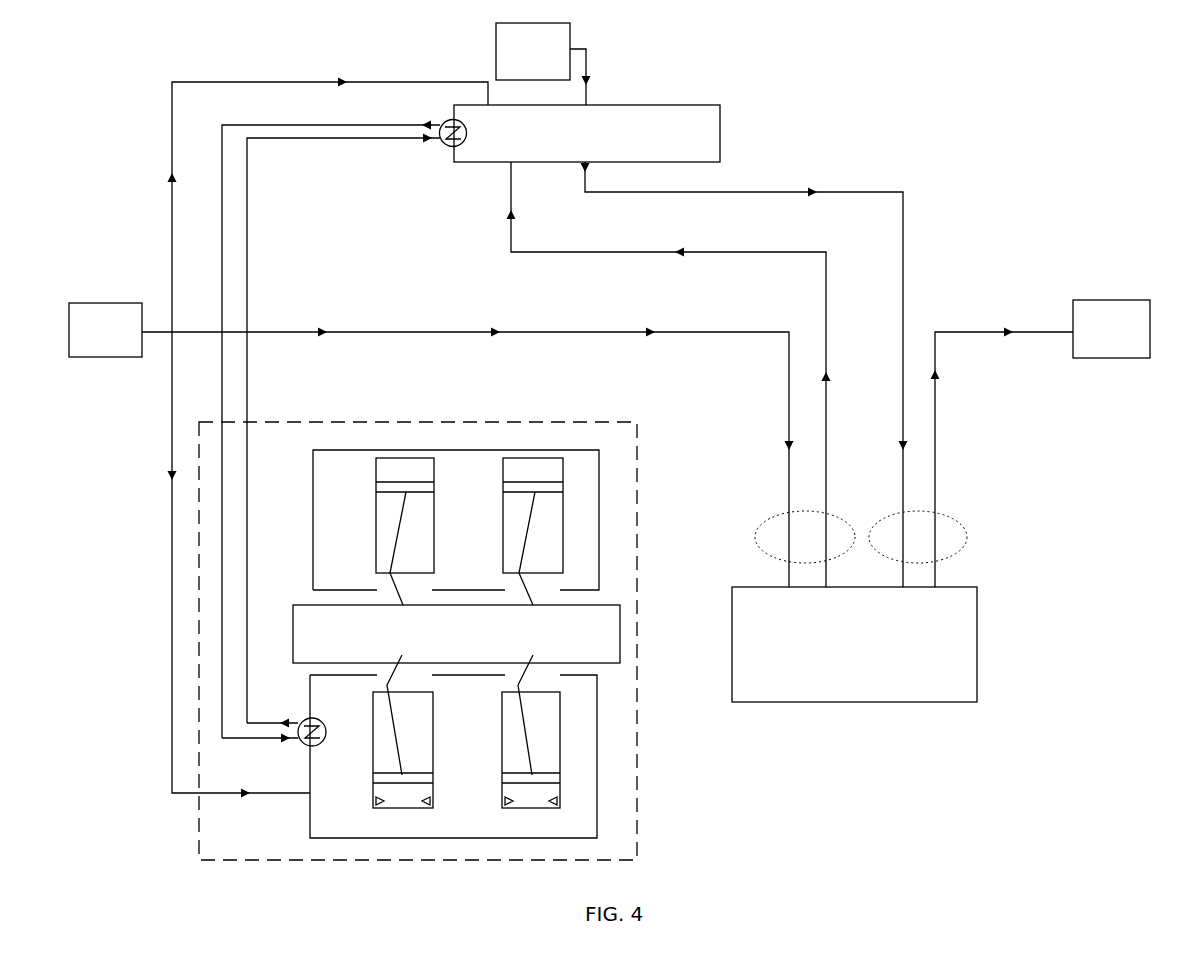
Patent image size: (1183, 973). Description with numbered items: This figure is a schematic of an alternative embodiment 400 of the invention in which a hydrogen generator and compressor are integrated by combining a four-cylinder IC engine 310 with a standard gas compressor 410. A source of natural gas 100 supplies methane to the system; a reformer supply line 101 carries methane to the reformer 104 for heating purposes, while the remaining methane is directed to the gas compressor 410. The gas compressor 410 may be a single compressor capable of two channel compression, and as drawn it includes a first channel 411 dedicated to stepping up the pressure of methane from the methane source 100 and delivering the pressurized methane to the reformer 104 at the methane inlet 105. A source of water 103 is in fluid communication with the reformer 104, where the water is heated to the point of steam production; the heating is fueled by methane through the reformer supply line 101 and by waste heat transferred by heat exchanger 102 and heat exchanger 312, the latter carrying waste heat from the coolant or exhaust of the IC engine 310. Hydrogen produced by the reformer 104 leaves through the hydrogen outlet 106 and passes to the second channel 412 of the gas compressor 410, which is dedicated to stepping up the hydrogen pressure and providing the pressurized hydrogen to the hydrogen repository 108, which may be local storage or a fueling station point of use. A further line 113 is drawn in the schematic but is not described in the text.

The source of natural gas 100 is at (124, 342).
The reformer supply line 101 is at (167, 218).
The heat exchanger 102 is at (443, 148).
The source of water 103 is at (551, 62).
The reformer 104 is at (605, 144).
The methane inlet 105 is at (516, 183).
The hydrogen outlet 106 is at (655, 193).
The hydrogen repository 108 is at (1129, 341).
The fuel line 113 is at (168, 610).
The IC engine 310 is at (272, 865).
The heat exchanger 312 is at (300, 716).
The alternative embodiment 400 is at (1026, 158).
The gas compressor 410 is at (873, 656).
The first channel 411 is at (760, 520).
The second channel 412 is at (958, 520).